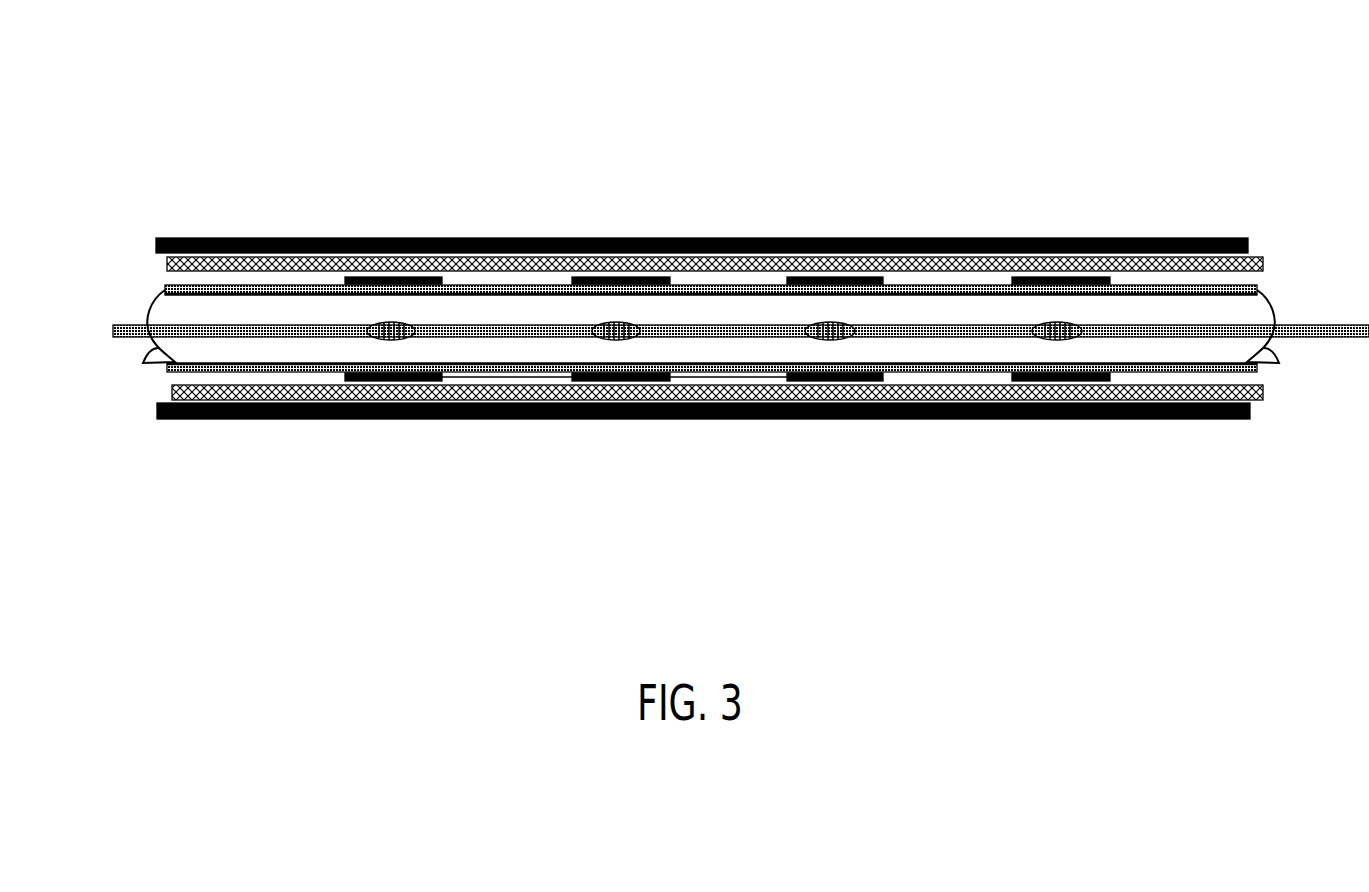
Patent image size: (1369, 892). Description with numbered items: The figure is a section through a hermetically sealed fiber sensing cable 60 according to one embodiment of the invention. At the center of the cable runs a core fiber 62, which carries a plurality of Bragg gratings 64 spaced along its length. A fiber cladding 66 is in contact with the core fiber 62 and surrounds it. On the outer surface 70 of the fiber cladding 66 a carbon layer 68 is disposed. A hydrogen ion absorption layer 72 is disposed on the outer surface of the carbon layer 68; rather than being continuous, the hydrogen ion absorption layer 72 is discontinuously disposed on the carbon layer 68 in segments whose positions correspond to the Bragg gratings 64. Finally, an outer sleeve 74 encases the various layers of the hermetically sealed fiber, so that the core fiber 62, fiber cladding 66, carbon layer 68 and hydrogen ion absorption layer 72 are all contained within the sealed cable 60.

The hermetically sealed fiber sensing cable 60 is at (255, 173).
The core fiber 62 is at (719, 336).
The Bragg gratings 64 is at (835, 340).
The fiber cladding 66 is at (979, 350).
The carbon layer 68 is at (543, 377).
The outer surface 70 is at (682, 377).
The hydrogen ion absorption layer 72 is at (405, 378).
The outer sleeve 74 is at (237, 398).